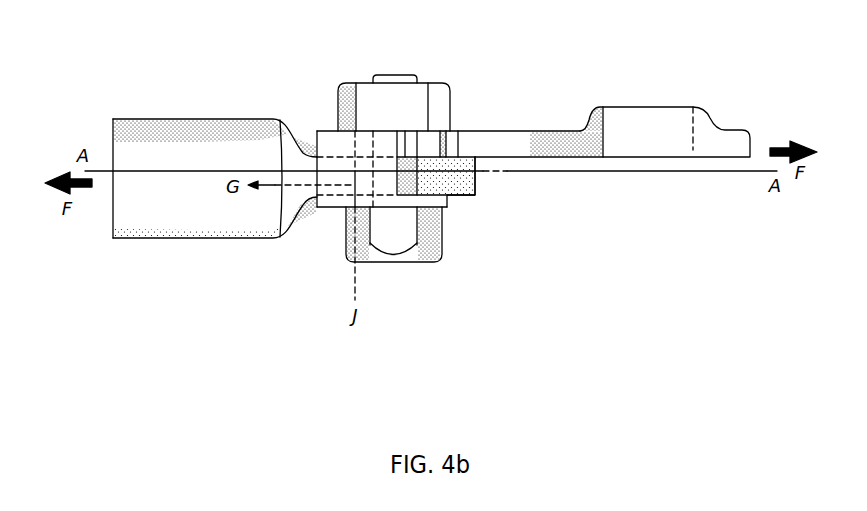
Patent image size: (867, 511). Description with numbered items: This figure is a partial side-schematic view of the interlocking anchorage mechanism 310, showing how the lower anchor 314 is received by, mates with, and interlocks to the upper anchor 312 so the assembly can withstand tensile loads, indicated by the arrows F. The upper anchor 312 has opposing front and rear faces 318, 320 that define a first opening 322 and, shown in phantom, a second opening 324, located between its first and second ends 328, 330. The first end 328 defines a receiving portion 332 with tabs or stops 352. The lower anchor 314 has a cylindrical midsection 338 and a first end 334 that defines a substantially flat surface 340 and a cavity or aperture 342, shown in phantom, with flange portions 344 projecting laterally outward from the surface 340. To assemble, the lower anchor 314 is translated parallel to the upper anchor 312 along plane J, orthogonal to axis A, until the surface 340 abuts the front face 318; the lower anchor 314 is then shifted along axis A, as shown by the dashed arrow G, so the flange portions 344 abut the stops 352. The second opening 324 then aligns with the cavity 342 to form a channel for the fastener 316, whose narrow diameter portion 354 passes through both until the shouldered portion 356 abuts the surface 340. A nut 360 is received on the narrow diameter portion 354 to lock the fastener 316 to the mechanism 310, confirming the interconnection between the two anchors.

The interlocking anchorage mechanism 310 is at (720, 289).
The upper anchor 312 is at (607, 276).
The lower anchor 314 is at (313, 336).
The fastener 316 is at (402, 240).
The front face 318 is at (738, 182).
The rear face 320 is at (738, 122).
The first opening 322 is at (693, 150).
The second opening 324 is at (381, 145).
The first end 328 is at (305, 137).
The second end 330 is at (760, 139).
The receiving portion 332 is at (321, 106).
The first end 334 is at (486, 182).
The cylindrical midsection 338 is at (150, 265).
The substantially flat surface 340 is at (447, 197).
The cavity or aperture 342 is at (417, 178).
The flange portions 344 is at (428, 178).
The stops 352 is at (320, 205).
The narrow diameter portion 354 is at (380, 75).
The shouldered portion 356 is at (450, 203).
The nut 360 is at (440, 97).